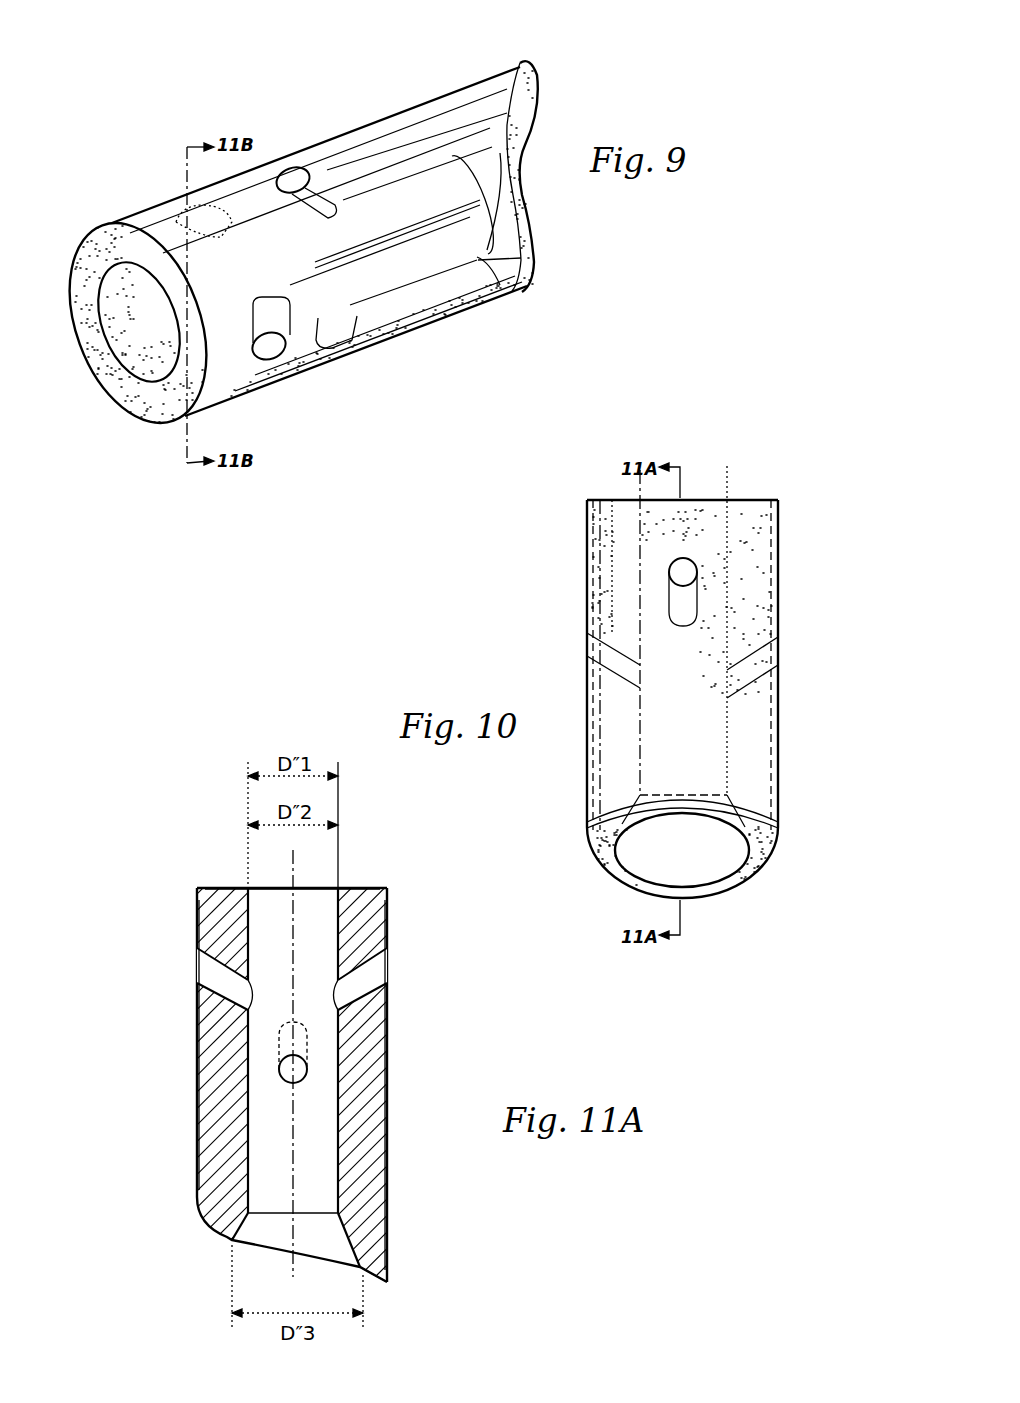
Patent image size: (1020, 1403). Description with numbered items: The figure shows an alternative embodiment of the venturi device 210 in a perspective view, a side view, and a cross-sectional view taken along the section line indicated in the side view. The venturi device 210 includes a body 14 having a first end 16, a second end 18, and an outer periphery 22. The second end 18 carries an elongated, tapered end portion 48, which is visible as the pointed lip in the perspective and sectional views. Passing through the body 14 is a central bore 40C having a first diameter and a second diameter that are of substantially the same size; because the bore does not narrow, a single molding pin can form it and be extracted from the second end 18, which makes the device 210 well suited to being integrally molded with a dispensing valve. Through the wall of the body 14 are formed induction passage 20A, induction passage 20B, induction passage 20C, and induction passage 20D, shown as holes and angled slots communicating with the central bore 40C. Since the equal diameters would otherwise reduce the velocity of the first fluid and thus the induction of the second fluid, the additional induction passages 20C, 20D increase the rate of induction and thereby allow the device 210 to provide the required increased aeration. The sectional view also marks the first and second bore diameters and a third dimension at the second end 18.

In FIG. 9, the venturi device 210 is at (158, 125).
In FIG. 10, the venturi device 210 is at (720, 492).
In FIG. 11A, the venturi device 210 is at (165, 1103).
In FIG. 9, the body 14 is at (357, 125).
In FIG. 10, the body 14 is at (778, 738).
In FIG. 11A, the body 14 is at (387, 1195).
In FIG. 9, the first end 16 is at (100, 363).
In FIG. 10, the first end 16 is at (608, 498).
In FIG. 11A, the first end 16 is at (228, 887).
In FIG. 9, the second end 18 is at (537, 238).
In FIG. 10, the second end 18 is at (592, 847).
In FIG. 11A, the second end 18 is at (218, 1237).
In FIG. 9, the elongated, tapered end portion 48 is at (532, 85).
In FIG. 10, the elongated, tapered end portion 48 is at (697, 891).
In FIG. 11A, the elongated, tapered end portion 48 is at (370, 1278).
In FIG. 9, the induction passage 20A is at (285, 172).
In FIG. 10, the induction passage 20A is at (778, 657).
In FIG. 9, the induction passage 20B is at (340, 327).
In FIG. 10, the induction passage 20B is at (587, 657).
In FIG. 11A, the induction passage 20B is at (307, 1072).
In FIG. 9, the induction passage 20C is at (178, 215).
In FIG. 11A, the induction passage 20C is at (378, 970).
In FIG. 9, the induction passage 20D is at (267, 360).
In FIG. 10, the induction passage 20D is at (693, 577).
In FIG. 11A, the induction passage 20D is at (203, 970).
In FIG. 11A, the outer periphery 22 is at (197, 1022).
In FIG. 9, the central bore 40C is at (460, 262).
In FIG. 11A, the central bore 40C is at (257, 1174).